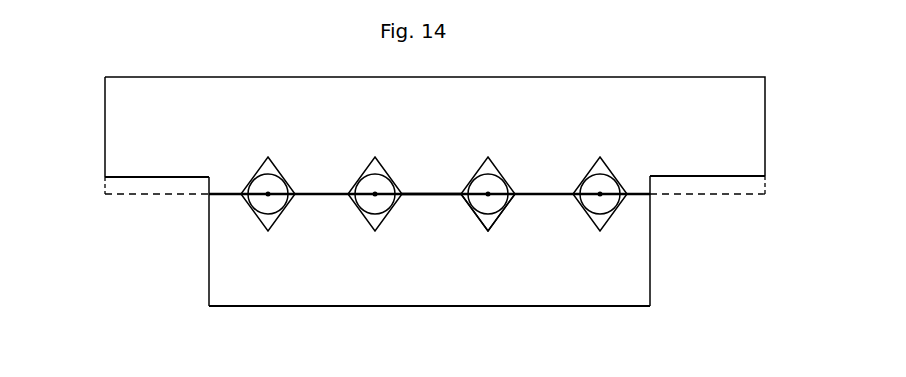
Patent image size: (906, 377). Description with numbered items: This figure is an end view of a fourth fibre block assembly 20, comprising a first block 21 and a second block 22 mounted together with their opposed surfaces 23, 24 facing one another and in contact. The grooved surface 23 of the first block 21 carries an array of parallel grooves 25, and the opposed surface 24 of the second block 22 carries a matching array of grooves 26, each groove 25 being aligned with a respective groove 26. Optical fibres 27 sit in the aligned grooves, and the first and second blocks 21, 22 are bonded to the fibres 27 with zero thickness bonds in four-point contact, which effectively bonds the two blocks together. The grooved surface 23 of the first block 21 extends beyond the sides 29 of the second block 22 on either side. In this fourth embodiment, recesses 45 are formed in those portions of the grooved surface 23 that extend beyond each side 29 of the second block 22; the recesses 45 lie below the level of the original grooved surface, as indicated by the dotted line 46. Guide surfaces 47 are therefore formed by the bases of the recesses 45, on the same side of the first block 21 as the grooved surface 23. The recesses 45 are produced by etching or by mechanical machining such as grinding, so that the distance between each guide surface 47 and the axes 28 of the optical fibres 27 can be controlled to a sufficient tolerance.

The fibre block assembly 20 is at (266, 72).
The first block 21 is at (713, 100).
The second block 22 is at (612, 288).
The grooved surface of the first block 23 is at (445, 190).
The opposed surface of the second block 24 is at (432, 198).
The grooves in the first block 25 is at (498, 168).
The grooves in the second block 26 is at (498, 212).
The optical fibres 27 is at (508, 180).
The axes of the optical fibres 28 is at (488, 193).
The sides of the second block 29 is at (209, 268).
The recesses 45 is at (130, 186).
The dotted line 46 is at (170, 200).
The guide surfaces 47 is at (153, 177).